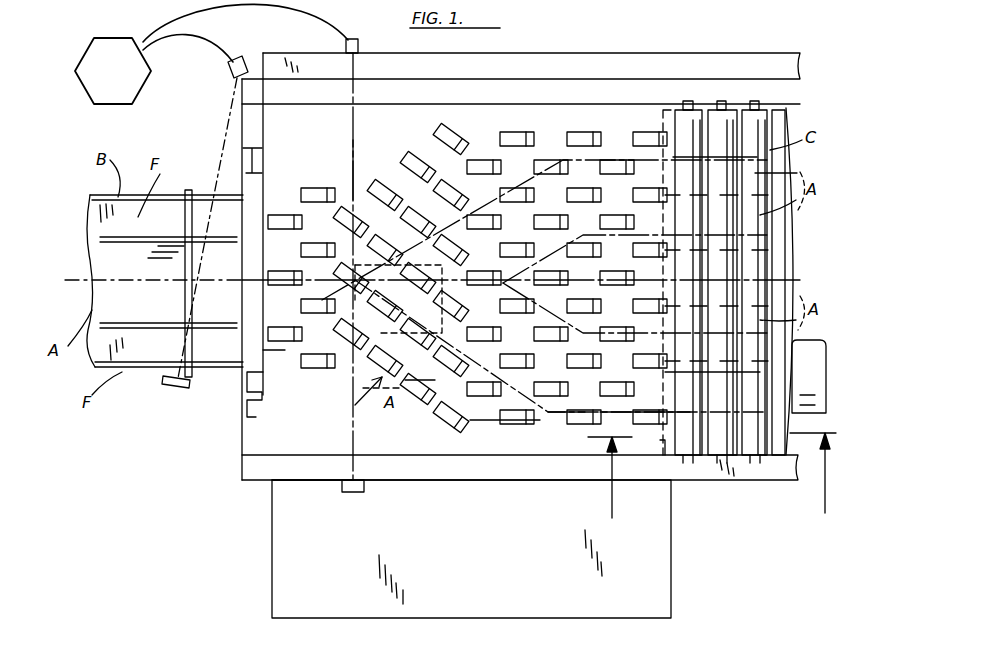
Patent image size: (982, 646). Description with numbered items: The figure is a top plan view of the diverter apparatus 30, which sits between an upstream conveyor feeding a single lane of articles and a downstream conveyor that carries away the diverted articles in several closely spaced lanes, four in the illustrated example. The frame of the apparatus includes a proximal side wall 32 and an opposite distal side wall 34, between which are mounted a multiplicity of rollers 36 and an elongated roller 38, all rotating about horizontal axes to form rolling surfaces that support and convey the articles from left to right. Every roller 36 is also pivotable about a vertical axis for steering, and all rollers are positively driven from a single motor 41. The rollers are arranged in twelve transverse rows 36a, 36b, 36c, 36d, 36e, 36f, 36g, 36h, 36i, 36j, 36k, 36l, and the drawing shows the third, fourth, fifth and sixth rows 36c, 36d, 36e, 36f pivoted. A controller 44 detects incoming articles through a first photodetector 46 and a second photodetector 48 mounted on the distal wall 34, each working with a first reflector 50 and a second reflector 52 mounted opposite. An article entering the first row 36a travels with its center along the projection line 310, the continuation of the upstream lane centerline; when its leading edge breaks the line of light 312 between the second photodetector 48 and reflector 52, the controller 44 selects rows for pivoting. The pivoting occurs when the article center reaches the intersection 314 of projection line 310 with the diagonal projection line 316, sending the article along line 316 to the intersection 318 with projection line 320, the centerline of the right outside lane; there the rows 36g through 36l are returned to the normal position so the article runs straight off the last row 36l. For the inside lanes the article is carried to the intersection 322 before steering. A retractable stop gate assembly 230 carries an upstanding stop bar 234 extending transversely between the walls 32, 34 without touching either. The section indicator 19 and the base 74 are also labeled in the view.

The section line 19 is at (713, 491).
The diverter apparatus 30 is at (708, 48).
The proximal side wall 32 is at (700, 480).
The distal side wall 34 is at (738, 78).
The rollers 36 is at (325, 382).
The first transverse row of rollers 36a is at (284, 214).
The second transverse row of rollers 36b is at (319, 187).
The third transverse row of rollers 36c is at (358, 138).
The fourth transverse row of rollers 36d is at (386, 186).
The fifth transverse row of rollers 36e is at (418, 158).
The sixth transverse row of rollers 36f is at (452, 130).
The seventh transverse row of rollers 36g is at (484, 159).
The eighth transverse row of rollers 36h is at (517, 131).
The ninth transverse row of rollers 36i is at (551, 159).
The tenth transverse row of rollers 36j is at (584, 131).
The eleventh transverse row of rollers 36k is at (618, 159).
The twelfth transverse row of rollers 36l is at (651, 131).
The elongated roller 38 is at (246, 376).
The motor 41 is at (822, 346).
The controller 44 is at (100, 83).
The first photodetector 46 is at (244, 60).
The second photodetector 48 is at (356, 38).
The first reflector 50 is at (172, 386).
The second reflector 52 is at (362, 493).
The base 74 is at (530, 618).
The retractable stop gate assembly 230 is at (772, 277).
The stop bar 234 is at (770, 140).
The projection line 310 is at (72, 282).
The line of light 312 is at (330, 480).
The intersection 314 is at (290, 352).
The projection line 316 is at (520, 410).
The intersection 318 is at (550, 410).
The projection line 320 is at (628, 456).
The intersection 322 is at (422, 396).